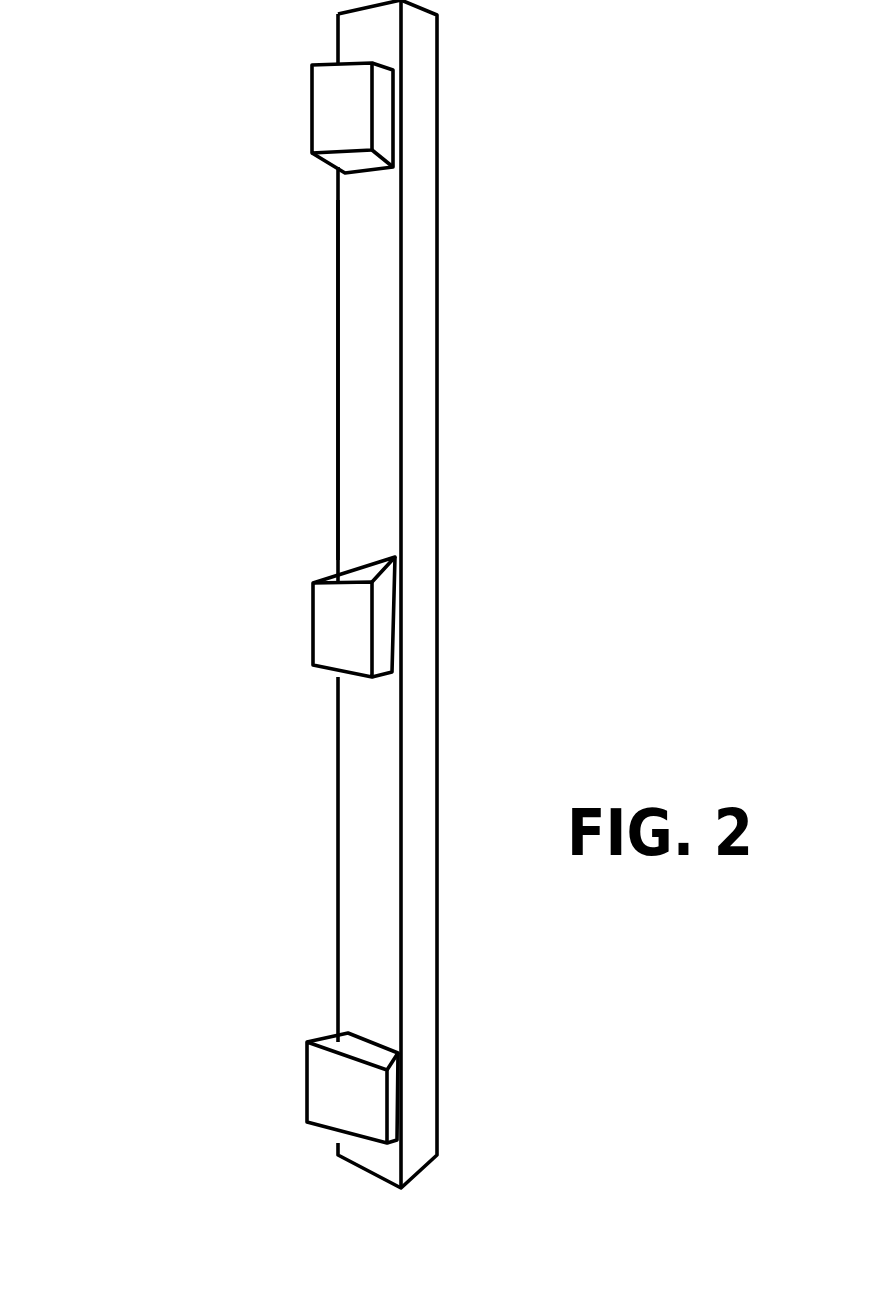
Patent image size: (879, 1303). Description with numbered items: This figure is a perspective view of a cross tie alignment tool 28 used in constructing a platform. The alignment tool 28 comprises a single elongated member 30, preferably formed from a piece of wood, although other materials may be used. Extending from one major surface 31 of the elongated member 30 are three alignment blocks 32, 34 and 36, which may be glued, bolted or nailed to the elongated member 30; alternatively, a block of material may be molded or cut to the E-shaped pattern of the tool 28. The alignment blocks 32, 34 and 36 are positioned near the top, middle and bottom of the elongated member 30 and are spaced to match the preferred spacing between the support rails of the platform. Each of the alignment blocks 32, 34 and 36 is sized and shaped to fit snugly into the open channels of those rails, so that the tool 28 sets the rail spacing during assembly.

The alignment tool 28 is at (618, 207).
The elongated member 30 is at (422, 443).
The major surface 31 is at (372, 380).
The alignment block 32 is at (330, 109).
The alignment block 34 is at (335, 627).
The alignment block 36 is at (357, 1102).